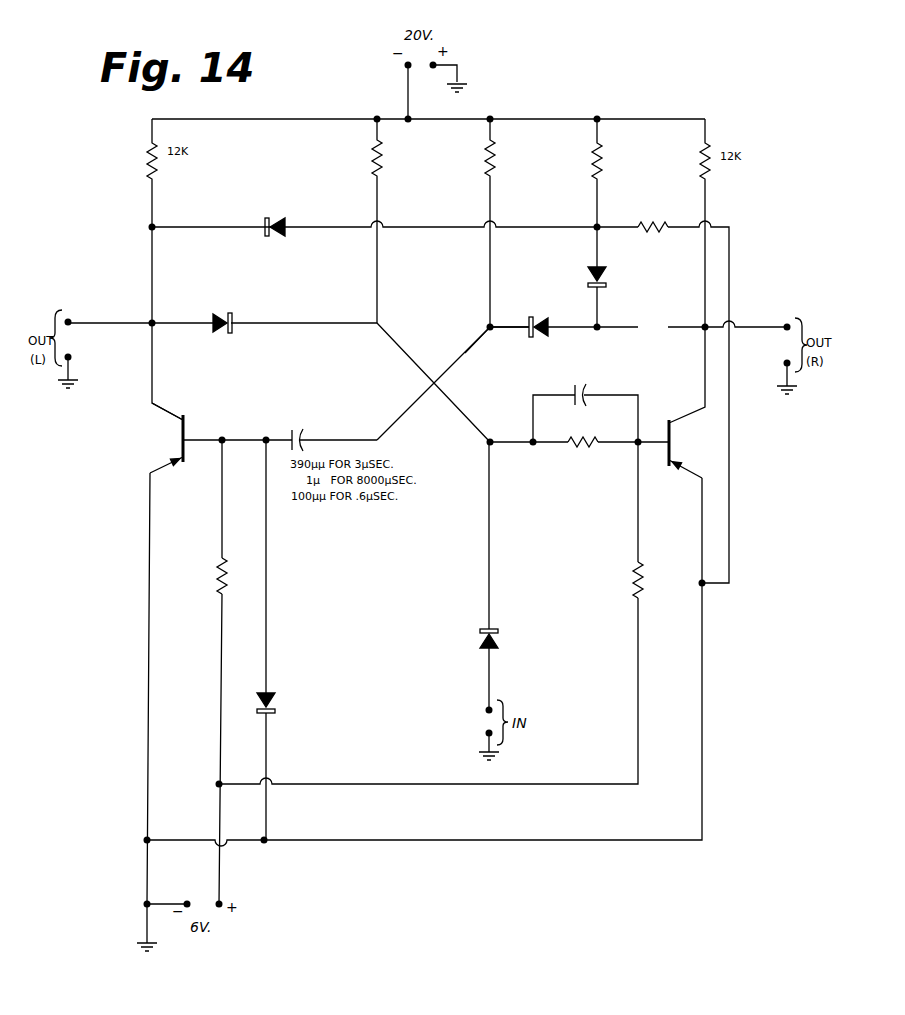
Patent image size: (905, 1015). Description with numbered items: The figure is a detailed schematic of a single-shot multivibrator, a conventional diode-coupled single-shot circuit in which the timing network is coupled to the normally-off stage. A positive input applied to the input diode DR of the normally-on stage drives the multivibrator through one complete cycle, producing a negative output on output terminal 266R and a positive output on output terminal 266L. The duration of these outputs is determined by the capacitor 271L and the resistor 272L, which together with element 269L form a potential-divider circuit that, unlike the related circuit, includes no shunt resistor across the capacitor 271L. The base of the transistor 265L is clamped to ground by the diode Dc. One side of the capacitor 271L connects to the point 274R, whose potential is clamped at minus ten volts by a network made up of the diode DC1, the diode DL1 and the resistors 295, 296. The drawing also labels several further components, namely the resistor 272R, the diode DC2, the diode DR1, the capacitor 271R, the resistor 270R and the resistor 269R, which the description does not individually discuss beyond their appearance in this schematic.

The resistor (6200 ohm) 272R is at (372, 160).
The resistor 272L is at (486, 166).
The resistor 296 is at (593, 162).
The resistor 295 is at (664, 222).
The diode DC2 is at (277, 214).
The diode DC1 is at (606, 284).
The diode DR1 is at (222, 312).
The diode DL1 is at (537, 316).
The output terminal 266L is at (72, 318).
The output terminal 266R is at (784, 323).
The point 274R is at (493, 332).
The transistor 265L is at (170, 411).
The capacitor 271L is at (298, 426).
The capacitor (120 pF) 271R is at (588, 399).
The resistor (1800 ohm) 270R is at (585, 448).
The potential-divider resistor 269L is at (218, 576).
The resistor (9100K) 269R is at (633, 584).
The diode Dc is at (276, 700).
The input diode DR is at (500, 634).